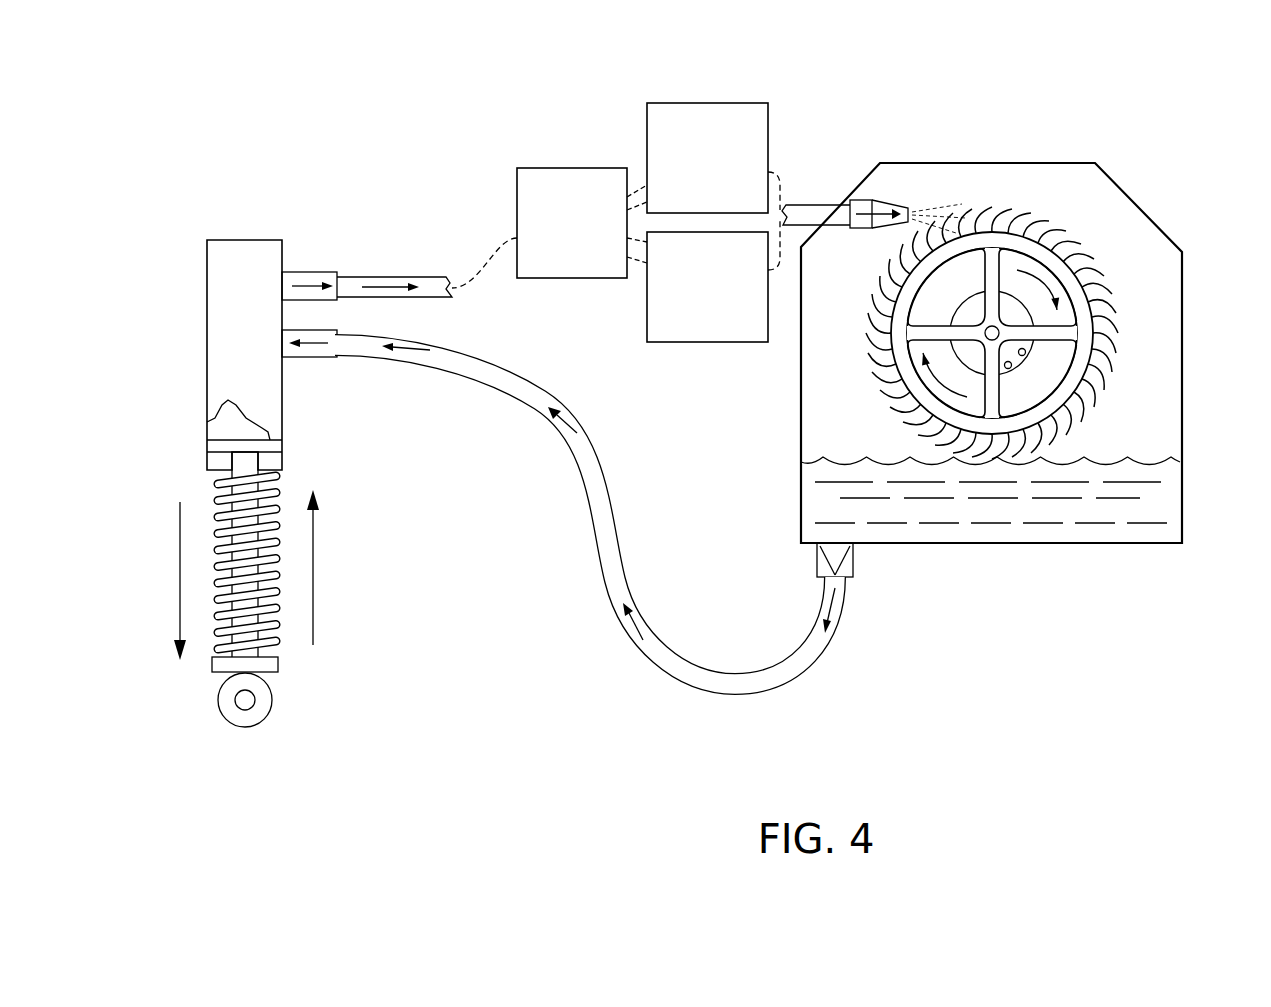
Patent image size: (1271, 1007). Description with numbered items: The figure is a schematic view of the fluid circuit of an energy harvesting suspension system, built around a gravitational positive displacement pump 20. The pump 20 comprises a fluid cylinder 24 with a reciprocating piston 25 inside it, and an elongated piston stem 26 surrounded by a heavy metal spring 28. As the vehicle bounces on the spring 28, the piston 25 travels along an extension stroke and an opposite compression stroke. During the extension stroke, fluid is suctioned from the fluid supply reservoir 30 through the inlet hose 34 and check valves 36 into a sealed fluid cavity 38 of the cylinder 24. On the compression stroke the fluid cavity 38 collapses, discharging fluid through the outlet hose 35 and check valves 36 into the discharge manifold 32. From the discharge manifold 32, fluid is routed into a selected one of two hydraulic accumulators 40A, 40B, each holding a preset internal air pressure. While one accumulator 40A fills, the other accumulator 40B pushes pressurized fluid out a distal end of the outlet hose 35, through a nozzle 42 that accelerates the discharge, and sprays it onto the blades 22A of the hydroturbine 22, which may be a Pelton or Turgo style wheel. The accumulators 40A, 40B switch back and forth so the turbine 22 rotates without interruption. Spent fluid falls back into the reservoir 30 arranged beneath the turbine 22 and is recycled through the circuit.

The positive displacement pump 20 is at (247, 210).
The hydroturbine 22 is at (1082, 205).
The blades 22A is at (1085, 250).
The fluid cylinder 24 is at (213, 285).
The reciprocating piston 25 is at (225, 440).
The piston stem 26 is at (262, 640).
The spring 28 is at (278, 490).
The fluid supply reservoir 30 is at (1182, 360).
The discharge manifold 32 is at (563, 168).
The inlet hose 34 is at (613, 480).
The outlet hose 35 is at (425, 283).
The check valve 36 is at (318, 276).
The fluid cavity 38 is at (208, 420).
The hydraulic accumulator 40A is at (672, 103).
The hydraulic accumulator 40B is at (712, 342).
The nozzle 42 is at (888, 203).